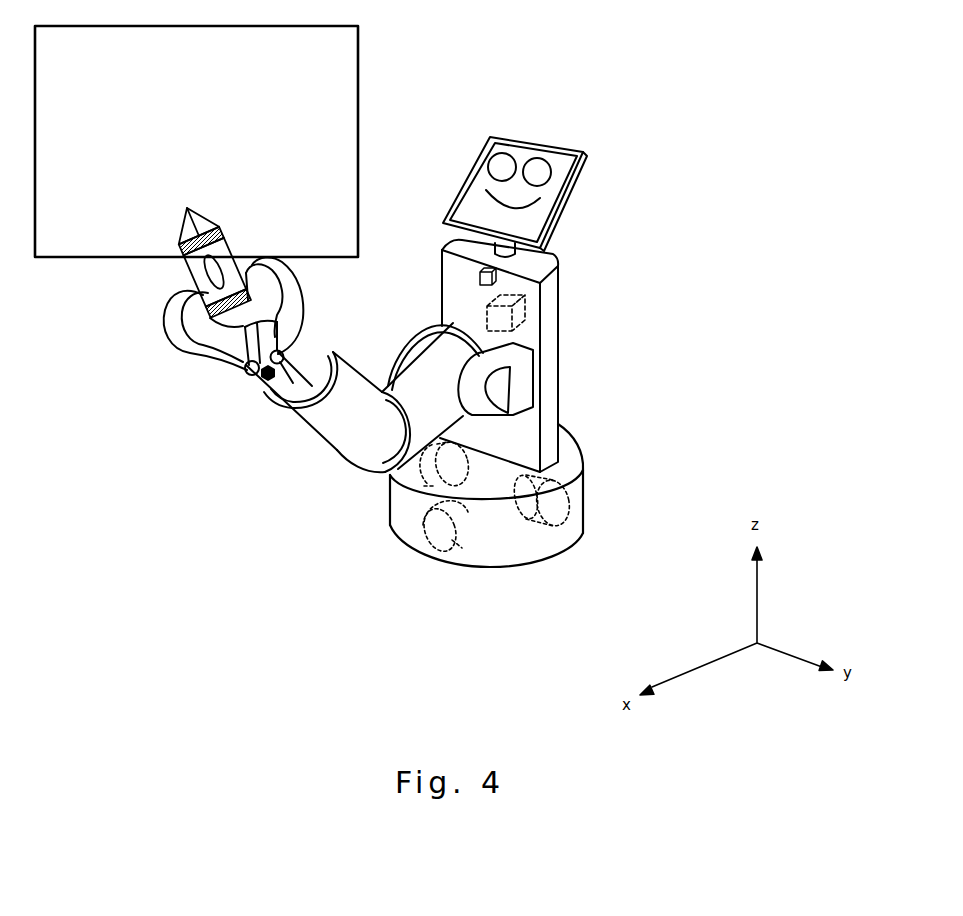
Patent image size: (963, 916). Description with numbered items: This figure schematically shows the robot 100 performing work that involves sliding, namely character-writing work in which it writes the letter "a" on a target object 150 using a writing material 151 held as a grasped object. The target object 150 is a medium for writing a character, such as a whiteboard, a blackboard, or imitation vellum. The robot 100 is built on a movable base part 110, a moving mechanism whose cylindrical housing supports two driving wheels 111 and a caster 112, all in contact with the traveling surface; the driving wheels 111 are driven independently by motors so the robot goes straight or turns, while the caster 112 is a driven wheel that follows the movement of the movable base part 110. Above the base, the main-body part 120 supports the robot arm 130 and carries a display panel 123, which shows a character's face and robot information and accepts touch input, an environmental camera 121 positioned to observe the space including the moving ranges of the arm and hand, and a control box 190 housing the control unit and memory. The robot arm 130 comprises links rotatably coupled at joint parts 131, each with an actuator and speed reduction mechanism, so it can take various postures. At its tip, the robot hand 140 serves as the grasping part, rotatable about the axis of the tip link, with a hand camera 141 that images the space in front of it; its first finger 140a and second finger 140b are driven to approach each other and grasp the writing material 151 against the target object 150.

The robot 100 is at (657, 186).
The movable base part 110 is at (585, 470).
The driving wheels 111 is at (410, 487).
The caster 112 is at (462, 565).
The main-body part 120 is at (556, 378).
The environmental camera 121 is at (480, 270).
The display panel 123 is at (561, 161).
The robot arm 130 is at (352, 372).
The joint part 131 is at (328, 447).
The robot hand 140 is at (320, 342).
The first finger 140a is at (168, 298).
The second finger 140b is at (271, 262).
The hand camera 141 is at (262, 396).
The target object 150 is at (360, 88).
The writing material 151 is at (197, 207).
The control box 190 is at (533, 307).